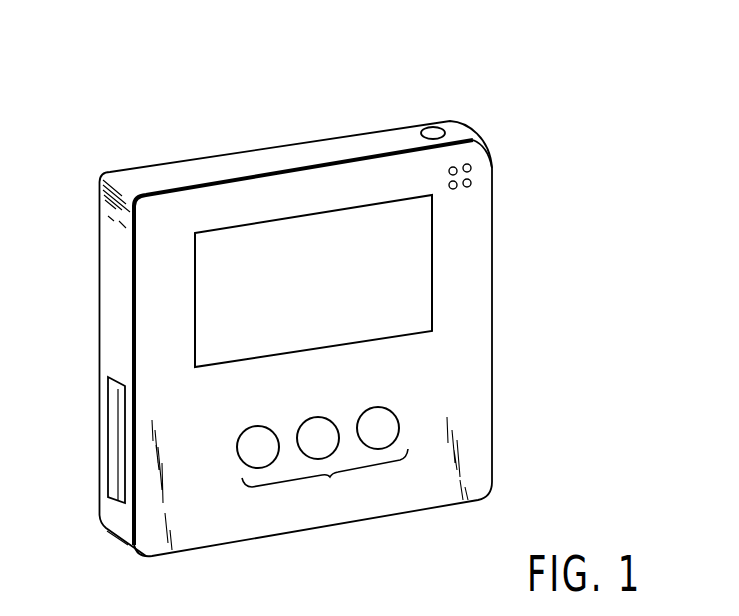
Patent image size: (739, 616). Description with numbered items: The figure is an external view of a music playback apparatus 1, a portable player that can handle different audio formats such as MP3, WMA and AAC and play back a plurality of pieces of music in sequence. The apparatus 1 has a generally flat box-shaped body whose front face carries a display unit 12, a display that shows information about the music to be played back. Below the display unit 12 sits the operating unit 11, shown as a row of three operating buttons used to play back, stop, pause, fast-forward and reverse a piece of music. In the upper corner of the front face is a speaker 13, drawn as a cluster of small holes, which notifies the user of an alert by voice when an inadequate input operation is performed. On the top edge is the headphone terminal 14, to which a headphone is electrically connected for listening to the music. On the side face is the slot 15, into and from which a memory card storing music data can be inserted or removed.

The music playback apparatus 1 is at (341, 84).
The operating unit 11 is at (330, 477).
The display unit 12 is at (432, 272).
The speaker 13 is at (470, 170).
The headphone terminal 14 is at (446, 127).
The slot 15 is at (113, 460).